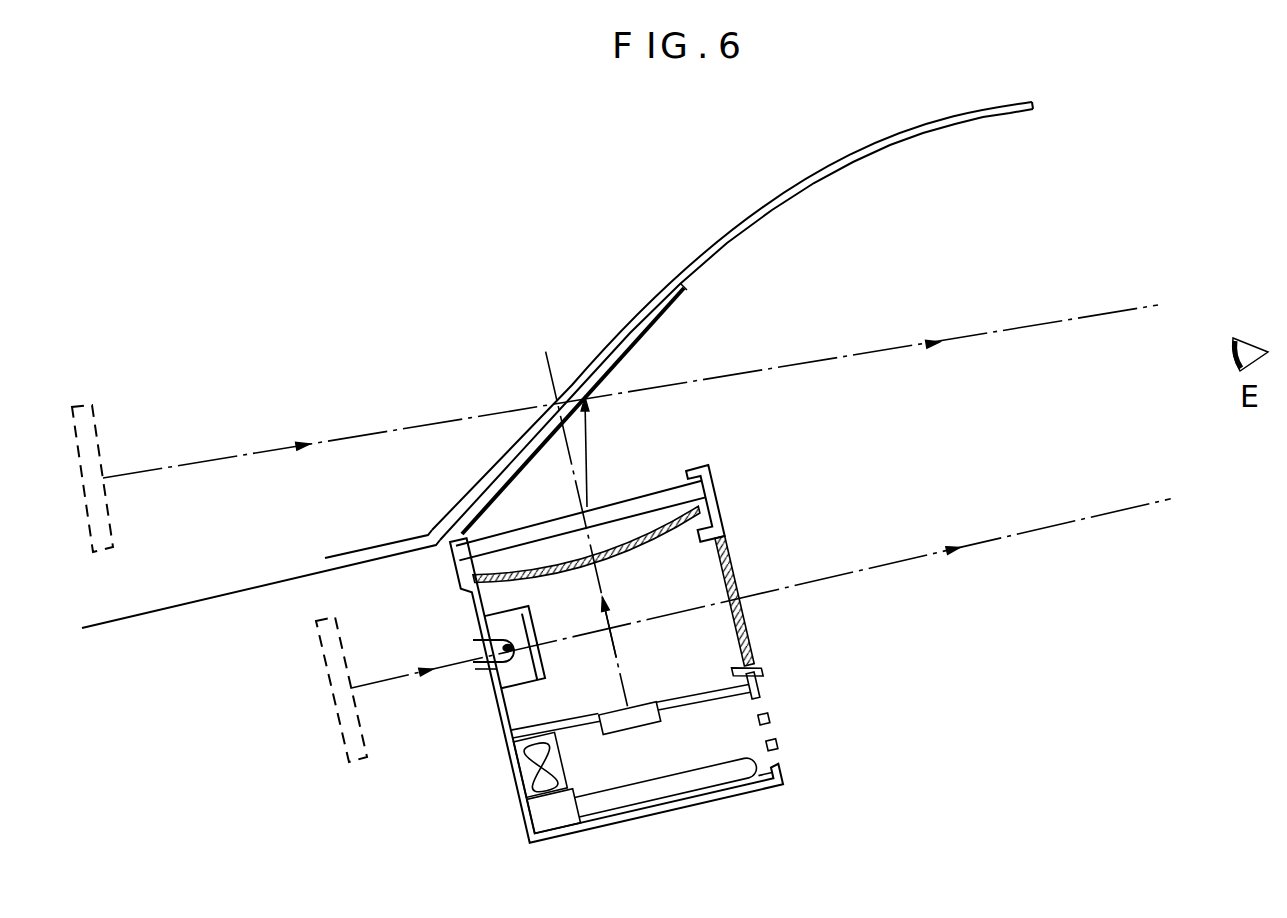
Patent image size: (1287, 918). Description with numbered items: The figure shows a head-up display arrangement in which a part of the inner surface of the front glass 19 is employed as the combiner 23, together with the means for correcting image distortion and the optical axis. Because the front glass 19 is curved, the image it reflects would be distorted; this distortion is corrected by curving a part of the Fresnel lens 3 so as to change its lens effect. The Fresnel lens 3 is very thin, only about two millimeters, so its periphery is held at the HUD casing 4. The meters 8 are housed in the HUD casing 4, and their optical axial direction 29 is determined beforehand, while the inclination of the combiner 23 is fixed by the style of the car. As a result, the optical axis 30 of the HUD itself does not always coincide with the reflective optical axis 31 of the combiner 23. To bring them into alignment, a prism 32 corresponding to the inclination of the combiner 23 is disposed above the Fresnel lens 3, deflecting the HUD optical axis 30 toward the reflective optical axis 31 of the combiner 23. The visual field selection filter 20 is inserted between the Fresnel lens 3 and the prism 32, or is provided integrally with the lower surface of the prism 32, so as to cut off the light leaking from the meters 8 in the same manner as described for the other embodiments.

The Fresnel lens 3 is at (720, 524).
The HUD casing 4 is at (722, 802).
The meters 8 is at (535, 622).
The front glass 19 is at (850, 155).
The visual field selection filter 20 is at (703, 500).
The combiner 23 is at (656, 322).
The optical axial direction of the meters 29 is at (903, 563).
The HUD optical axis 30 is at (598, 578).
The reflective optical axis of the combiner 31 is at (596, 455).
The prism 32 is at (718, 478).